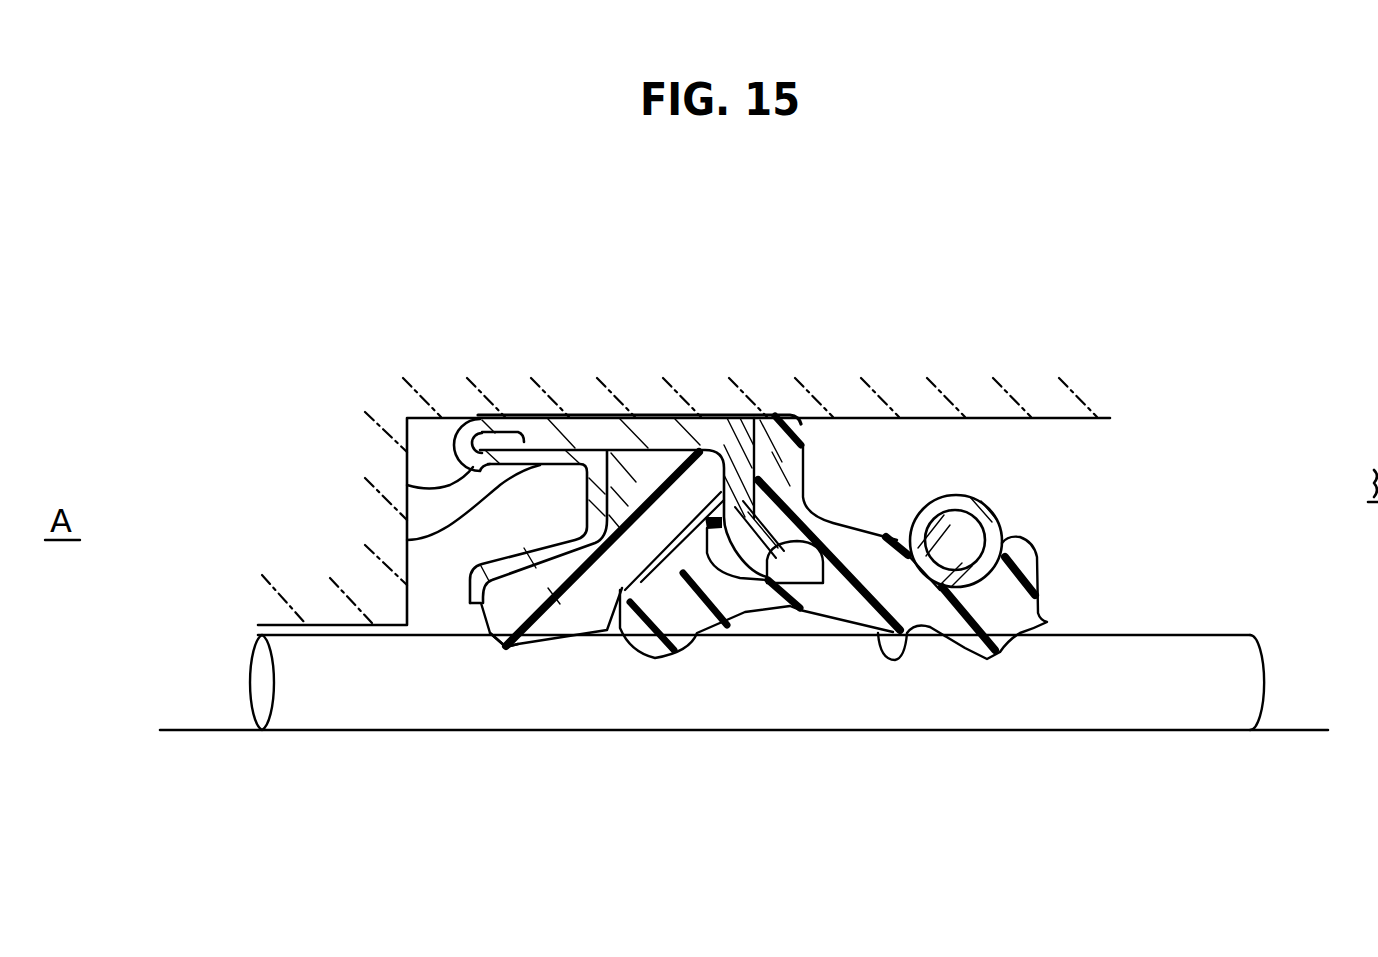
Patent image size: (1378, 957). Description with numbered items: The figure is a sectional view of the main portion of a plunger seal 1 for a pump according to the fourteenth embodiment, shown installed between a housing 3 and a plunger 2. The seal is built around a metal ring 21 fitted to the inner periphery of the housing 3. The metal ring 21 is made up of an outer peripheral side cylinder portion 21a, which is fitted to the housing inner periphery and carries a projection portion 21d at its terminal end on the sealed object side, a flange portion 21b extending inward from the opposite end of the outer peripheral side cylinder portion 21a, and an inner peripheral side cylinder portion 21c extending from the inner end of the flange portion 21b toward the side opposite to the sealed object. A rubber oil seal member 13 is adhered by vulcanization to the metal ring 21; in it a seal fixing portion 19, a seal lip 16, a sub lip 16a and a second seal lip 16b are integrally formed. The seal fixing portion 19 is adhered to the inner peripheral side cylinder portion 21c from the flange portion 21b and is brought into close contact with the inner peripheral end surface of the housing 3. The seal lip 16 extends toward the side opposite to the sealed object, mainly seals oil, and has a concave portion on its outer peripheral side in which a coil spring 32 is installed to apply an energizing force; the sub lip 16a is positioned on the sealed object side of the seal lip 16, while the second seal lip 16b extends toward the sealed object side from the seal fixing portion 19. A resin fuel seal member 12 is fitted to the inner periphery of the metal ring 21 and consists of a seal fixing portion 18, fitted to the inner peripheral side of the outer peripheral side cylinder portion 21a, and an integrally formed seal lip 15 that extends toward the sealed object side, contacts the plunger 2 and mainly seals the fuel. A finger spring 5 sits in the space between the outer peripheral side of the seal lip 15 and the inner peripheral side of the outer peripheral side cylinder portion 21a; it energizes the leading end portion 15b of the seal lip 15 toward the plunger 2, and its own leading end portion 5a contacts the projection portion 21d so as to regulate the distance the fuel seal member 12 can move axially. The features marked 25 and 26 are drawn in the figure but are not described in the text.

The plunger seal 1 is at (811, 447).
The plunger 2 is at (386, 677).
The housing 3 is at (517, 403).
The finger spring 5 is at (407, 540).
The leading end portion 5a is at (407, 485).
The fuel seal member 12 is at (622, 588).
The oil seal member 13 is at (860, 522).
The seal lip 15 is at (484, 640).
The leading end portion 15b is at (492, 648).
The seal lip 16 is at (982, 648).
The sub lip 16a is at (882, 642).
The second seal lip 16b is at (652, 652).
The seal fixing portion 18 is at (680, 490).
The seal fixing portion 19 is at (766, 418).
The metal ring 21 is at (618, 435).
The outer peripheral side cylinder portion 21a is at (557, 425).
The flange portion 21b is at (725, 470).
The inner peripheral side cylinder portion 21c is at (766, 583).
The projection portion 21d is at (458, 453).
The intermediate lip 25 is at (849, 590).
The rubber layer 26 is at (567, 598).
The coil spring 32 is at (975, 507).